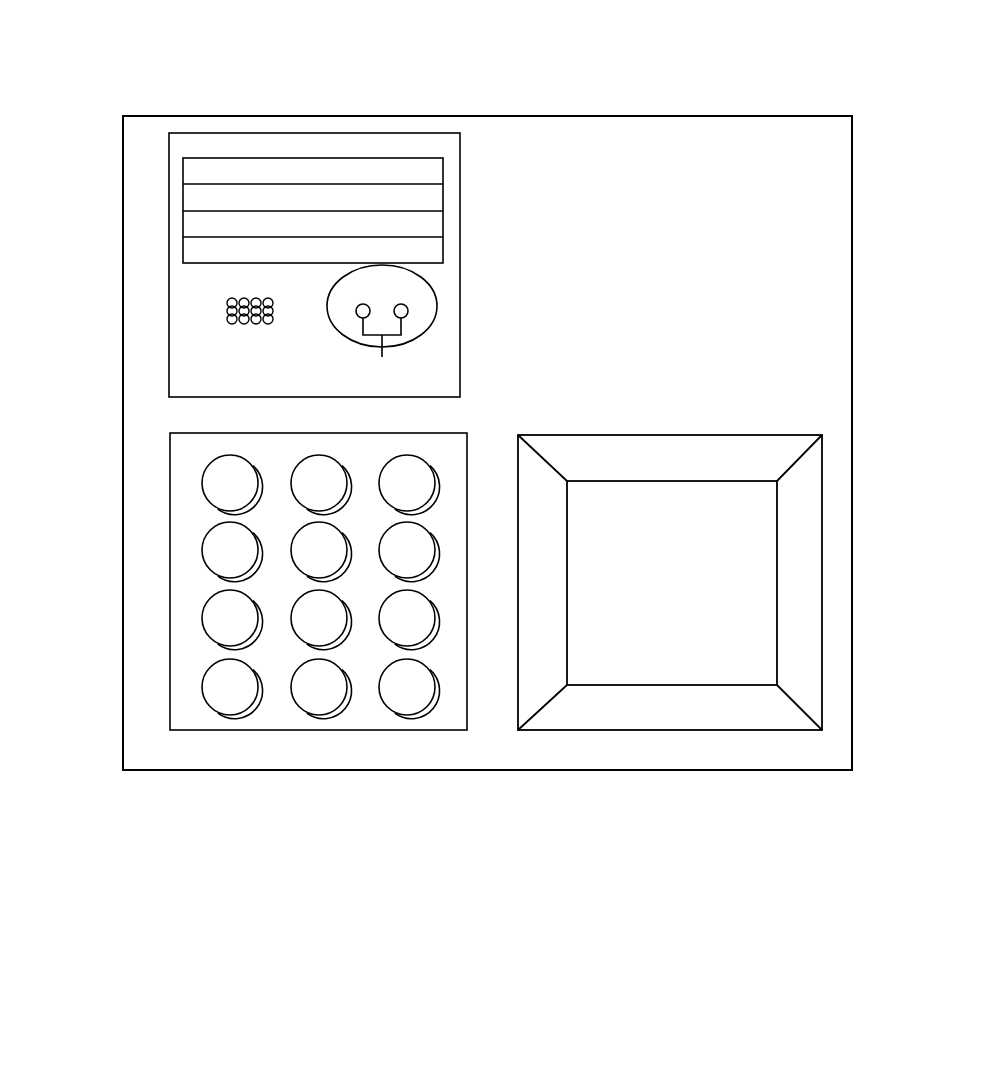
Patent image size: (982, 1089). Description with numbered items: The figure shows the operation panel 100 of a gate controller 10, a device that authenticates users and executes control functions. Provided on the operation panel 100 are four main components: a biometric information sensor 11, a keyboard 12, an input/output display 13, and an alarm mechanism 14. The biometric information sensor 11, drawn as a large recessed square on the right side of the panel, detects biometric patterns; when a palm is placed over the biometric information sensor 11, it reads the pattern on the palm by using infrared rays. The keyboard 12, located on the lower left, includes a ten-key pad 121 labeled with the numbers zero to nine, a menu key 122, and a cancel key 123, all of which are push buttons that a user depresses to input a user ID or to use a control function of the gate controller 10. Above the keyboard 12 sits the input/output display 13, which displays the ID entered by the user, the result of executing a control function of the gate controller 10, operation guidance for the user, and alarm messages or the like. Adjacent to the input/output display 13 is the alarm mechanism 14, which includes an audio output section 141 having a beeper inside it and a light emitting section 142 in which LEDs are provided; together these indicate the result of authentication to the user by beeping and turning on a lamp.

The gate controller 10 is at (790, 82).
The operation panel 100 is at (830, 246).
The biometric information sensor 11 is at (693, 510).
The keyboard 12 is at (63, 537).
The ten-key pad 121 is at (203, 585).
The menu key 122 is at (202, 687).
The cancel key 123 is at (385, 700).
The input/output display 13 is at (198, 200).
The alarm mechanism 14 is at (80, 243).
The audio output section 141 is at (210, 304).
The light emitting section 142 is at (323, 330).